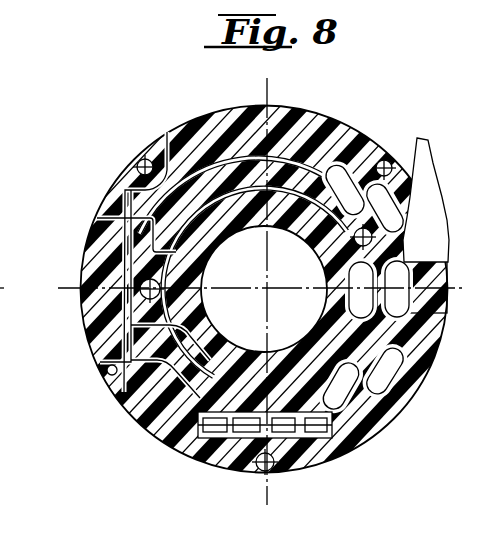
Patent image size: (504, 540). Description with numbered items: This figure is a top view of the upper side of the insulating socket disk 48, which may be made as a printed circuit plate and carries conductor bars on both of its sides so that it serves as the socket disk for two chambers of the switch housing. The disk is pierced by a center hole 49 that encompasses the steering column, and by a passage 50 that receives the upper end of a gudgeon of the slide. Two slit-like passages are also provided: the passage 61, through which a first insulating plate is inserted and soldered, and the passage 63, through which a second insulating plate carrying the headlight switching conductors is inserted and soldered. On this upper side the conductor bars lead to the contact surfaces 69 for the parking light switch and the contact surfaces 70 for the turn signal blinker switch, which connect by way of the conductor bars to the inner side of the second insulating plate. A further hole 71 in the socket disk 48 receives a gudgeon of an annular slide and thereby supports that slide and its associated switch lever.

The insulating socket disk 48 is at (181, 114).
The center hole 49 is at (253, 268).
The passage 50 is at (362, 135).
The slit-like passage 61 is at (233, 432).
The slit-like passage 63 is at (121, 233).
The contact surfaces for the parking light switch 69 is at (328, 282).
The contact surfaces for the turn signal blinker switch 70 is at (426, 188).
The hole 71 is at (143, 301).